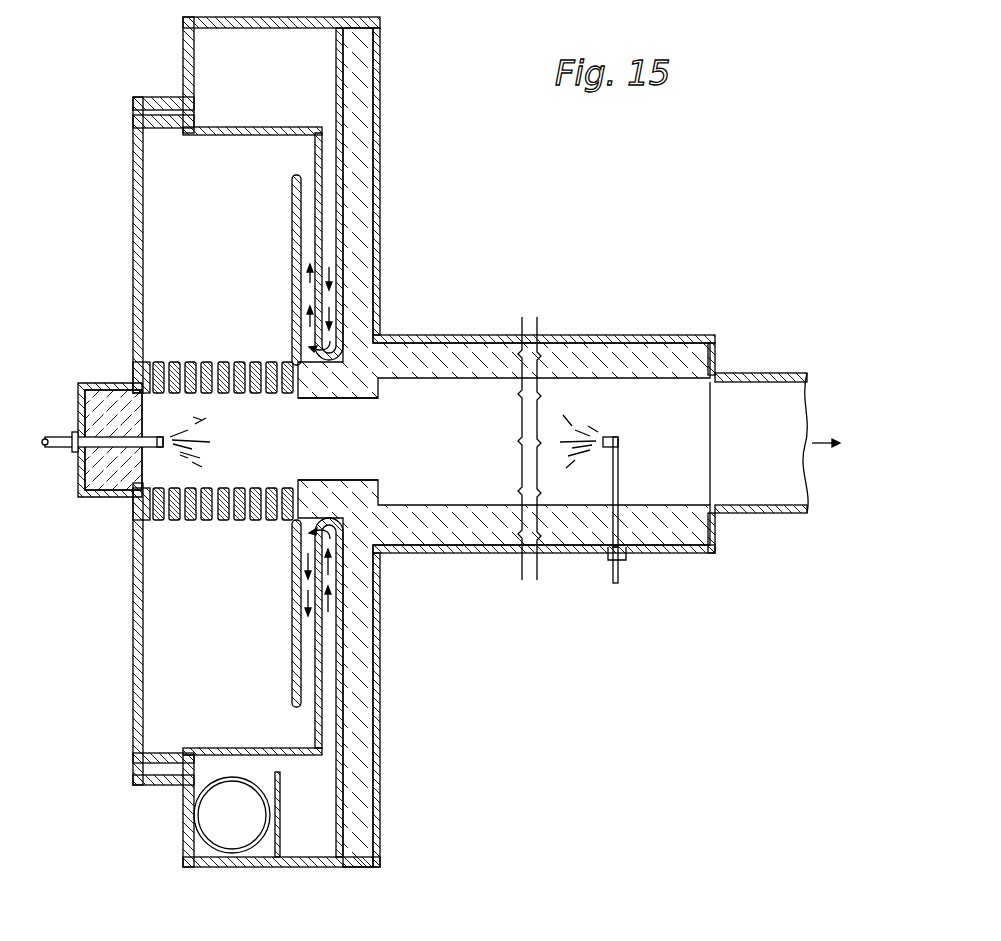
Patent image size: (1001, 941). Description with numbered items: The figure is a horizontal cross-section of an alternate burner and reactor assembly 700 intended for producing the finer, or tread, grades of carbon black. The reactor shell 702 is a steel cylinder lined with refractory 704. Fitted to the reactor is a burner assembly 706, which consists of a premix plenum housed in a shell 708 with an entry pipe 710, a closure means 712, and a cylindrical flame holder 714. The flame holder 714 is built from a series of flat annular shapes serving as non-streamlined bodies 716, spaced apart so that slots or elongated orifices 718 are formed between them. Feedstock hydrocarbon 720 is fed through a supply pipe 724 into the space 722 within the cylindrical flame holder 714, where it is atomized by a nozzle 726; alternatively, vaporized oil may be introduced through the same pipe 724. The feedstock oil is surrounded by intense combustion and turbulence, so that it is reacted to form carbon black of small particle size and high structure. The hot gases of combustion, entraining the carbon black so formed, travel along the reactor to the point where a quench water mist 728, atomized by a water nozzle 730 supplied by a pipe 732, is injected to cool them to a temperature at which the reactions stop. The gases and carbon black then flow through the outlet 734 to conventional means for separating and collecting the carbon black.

The burner and reactor assembly 700 is at (398, 183).
The reactor shell 702 is at (380, 128).
The refractory 704 is at (365, 295).
The burner assembly 706 is at (117, 361).
The shell 708 is at (138, 193).
The entry pipe 710 is at (200, 842).
The closure means 712 is at (103, 497).
The cylindrical flame holder 714 is at (210, 343).
The non-streamlined bodies 716 is at (188, 524).
The slots or elongated orifices 718 is at (278, 523).
The feedstock hydrocarbon 720 is at (208, 427).
The space 722 is at (265, 462).
The supply pipe 724 is at (44, 436).
The nozzle 726 is at (170, 433).
The quench water mist 728 is at (566, 438).
The water nozzle 730 is at (612, 437).
The pipe 732 is at (622, 578).
The outlet 734 is at (755, 513).